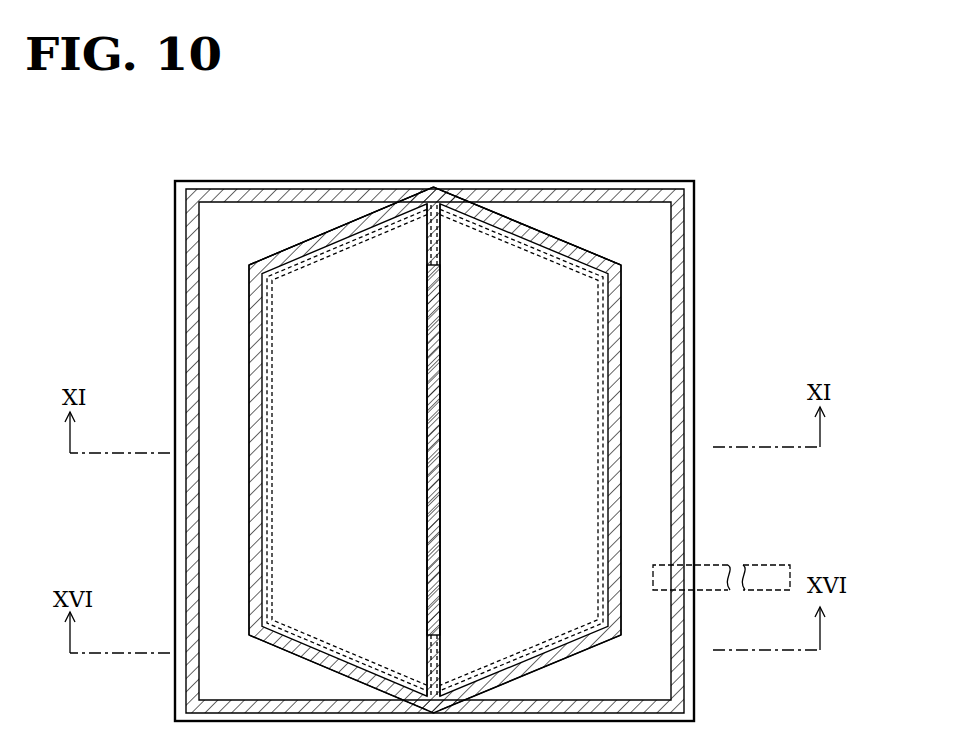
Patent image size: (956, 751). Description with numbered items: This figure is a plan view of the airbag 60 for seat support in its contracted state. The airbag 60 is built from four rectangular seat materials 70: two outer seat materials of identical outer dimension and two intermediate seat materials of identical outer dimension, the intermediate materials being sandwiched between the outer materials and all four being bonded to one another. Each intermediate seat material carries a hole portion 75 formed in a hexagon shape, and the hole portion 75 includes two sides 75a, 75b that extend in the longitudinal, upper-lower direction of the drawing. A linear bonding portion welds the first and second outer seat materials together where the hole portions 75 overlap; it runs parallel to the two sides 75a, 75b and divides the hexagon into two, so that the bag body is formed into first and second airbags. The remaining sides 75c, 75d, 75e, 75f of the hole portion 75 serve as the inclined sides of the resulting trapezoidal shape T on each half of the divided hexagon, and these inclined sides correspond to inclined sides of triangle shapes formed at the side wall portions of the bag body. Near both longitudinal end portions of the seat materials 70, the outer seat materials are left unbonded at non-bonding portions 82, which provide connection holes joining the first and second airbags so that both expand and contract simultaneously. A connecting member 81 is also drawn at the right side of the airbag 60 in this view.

The airbag 60 is at (170, 162).
The seat materials 70 is at (695, 283).
The hole portion 75 is at (400, 228).
The side of hole portion 75a is at (615, 486).
The side of hole portion 75b is at (252, 446).
The side of hole portion 75c is at (592, 652).
The side of hole portion 75d is at (533, 223).
The side of hole portion 75e is at (333, 229).
The side of hole portion 75f is at (335, 671).
The non-bonding portion 82 is at (442, 236).
The connecting member (46) 81 is at (762, 565).
The trapezoidal shape T is at (250, 535).